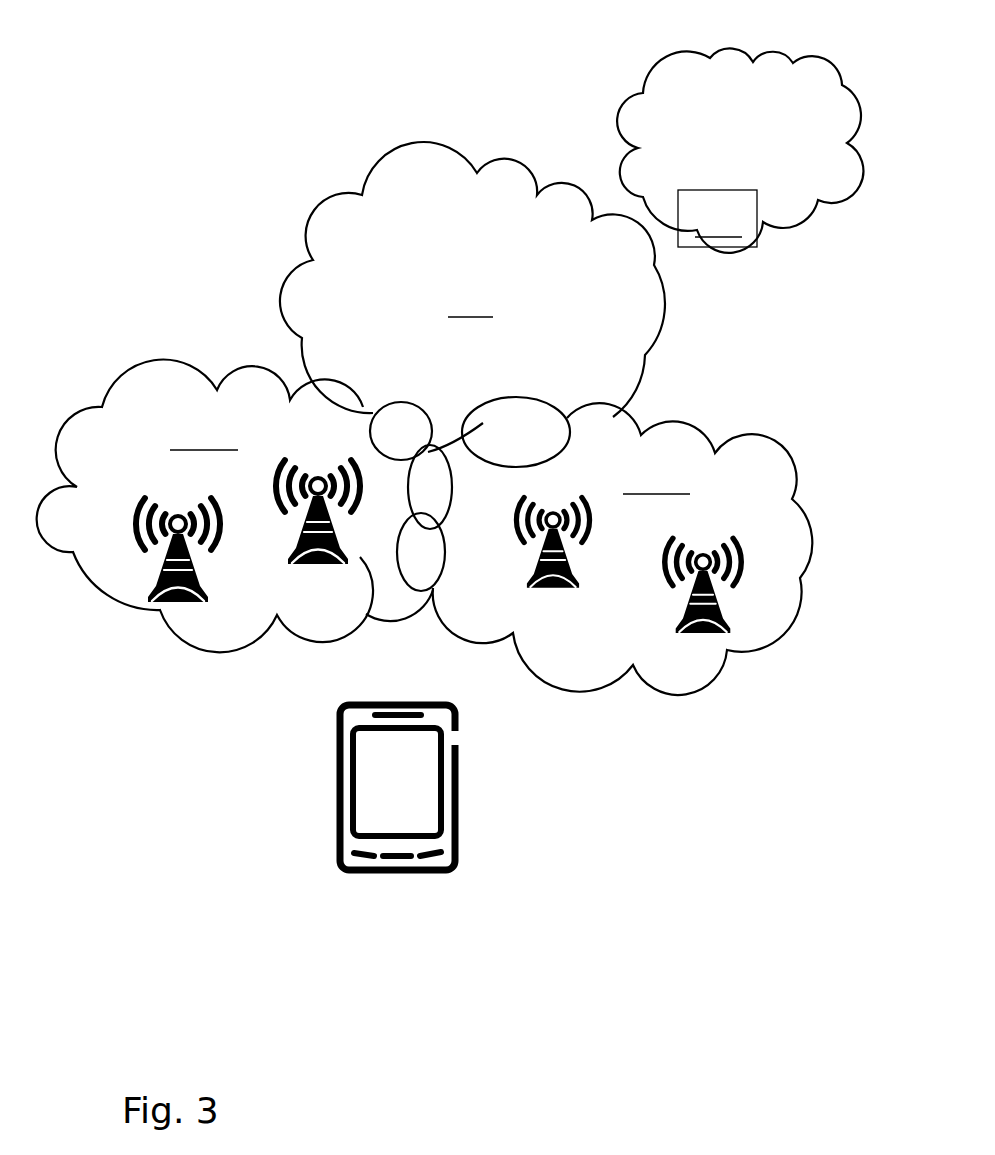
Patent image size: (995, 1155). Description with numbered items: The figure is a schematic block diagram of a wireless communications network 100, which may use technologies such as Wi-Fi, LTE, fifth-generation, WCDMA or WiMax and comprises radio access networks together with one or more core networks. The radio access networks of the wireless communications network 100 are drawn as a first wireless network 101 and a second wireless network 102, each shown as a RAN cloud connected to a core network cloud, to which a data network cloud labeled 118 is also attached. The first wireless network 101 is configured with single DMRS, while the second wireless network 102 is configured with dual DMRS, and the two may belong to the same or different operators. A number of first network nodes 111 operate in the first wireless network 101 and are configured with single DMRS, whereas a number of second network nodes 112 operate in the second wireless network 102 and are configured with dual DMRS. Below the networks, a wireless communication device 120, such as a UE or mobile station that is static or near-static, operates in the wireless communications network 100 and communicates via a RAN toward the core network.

The wireless communications network 100 is at (237, 211).
The first wireless network 101 is at (205, 552).
The second wireless network 102 is at (623, 580).
The first network nodes 111 is at (248, 551).
The second network nodes 112 is at (628, 588).
The data network (DN) 118 is at (827, 238).
The wireless communication device 120 is at (420, 797).